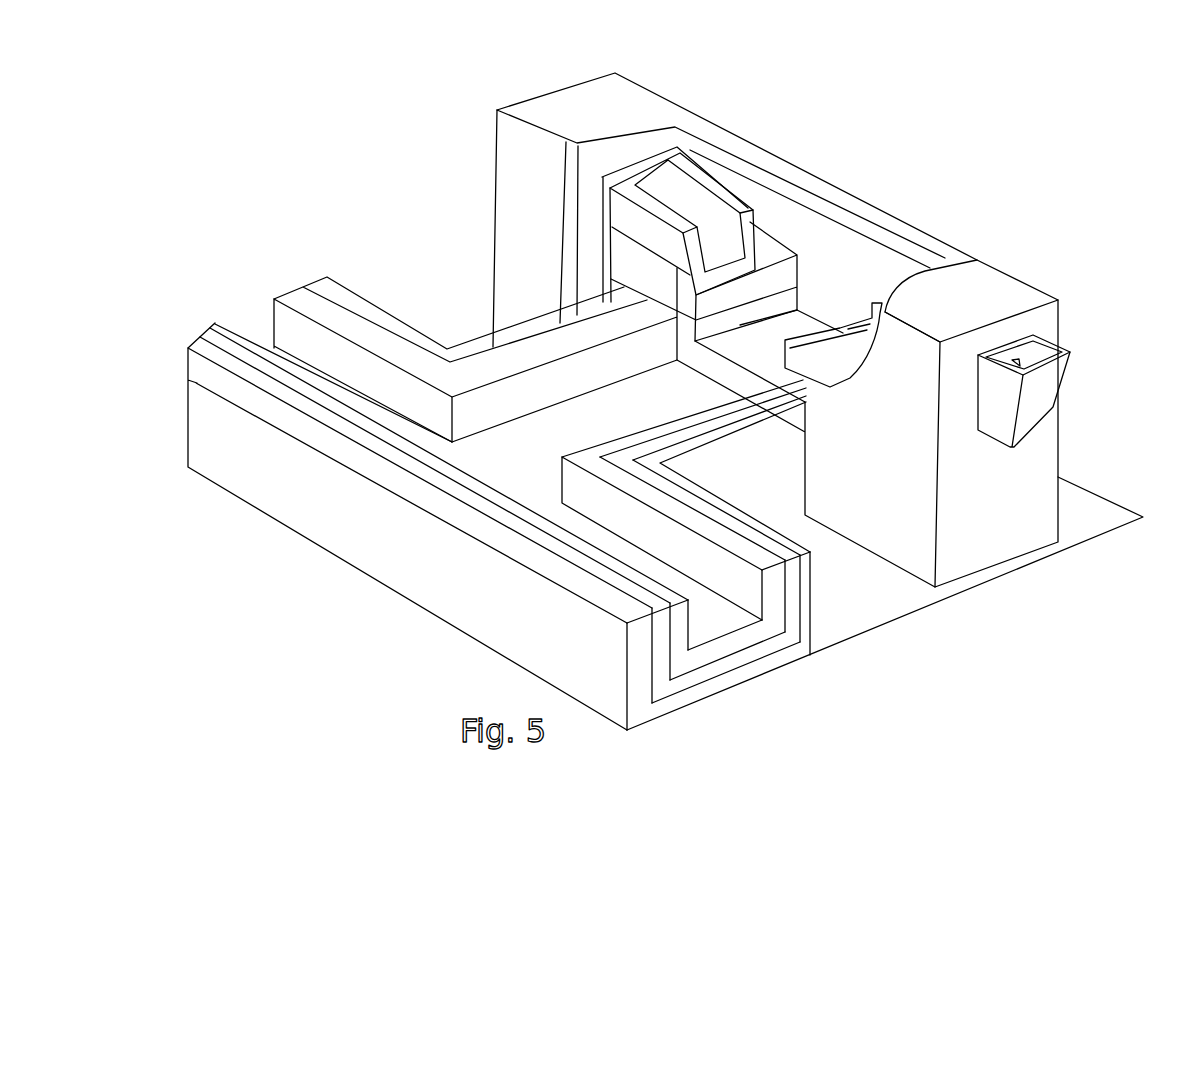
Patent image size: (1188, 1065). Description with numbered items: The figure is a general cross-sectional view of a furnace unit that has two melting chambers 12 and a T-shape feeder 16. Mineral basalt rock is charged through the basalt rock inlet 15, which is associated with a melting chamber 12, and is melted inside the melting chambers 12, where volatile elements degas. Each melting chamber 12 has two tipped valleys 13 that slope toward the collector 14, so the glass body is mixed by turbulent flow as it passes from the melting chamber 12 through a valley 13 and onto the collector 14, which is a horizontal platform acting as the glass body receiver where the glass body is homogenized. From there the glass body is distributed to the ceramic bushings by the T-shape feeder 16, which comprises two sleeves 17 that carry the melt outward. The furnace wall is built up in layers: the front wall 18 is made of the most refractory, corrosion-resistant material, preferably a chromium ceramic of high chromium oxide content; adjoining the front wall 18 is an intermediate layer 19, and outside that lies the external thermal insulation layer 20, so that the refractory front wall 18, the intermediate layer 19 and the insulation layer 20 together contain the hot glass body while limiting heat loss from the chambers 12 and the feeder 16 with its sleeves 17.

The melting chamber 12 is at (642, 107).
The tipped valley 13 is at (752, 282).
The collector 14 is at (790, 327).
The basalt rock inlet 15 is at (1038, 348).
The T-shape feeder 16 is at (557, 435).
The sleeve 17 is at (305, 373).
The front wall 18 is at (777, 582).
The intermediate layer 19 is at (791, 575).
The external thermal insulation layer 20 is at (807, 567).